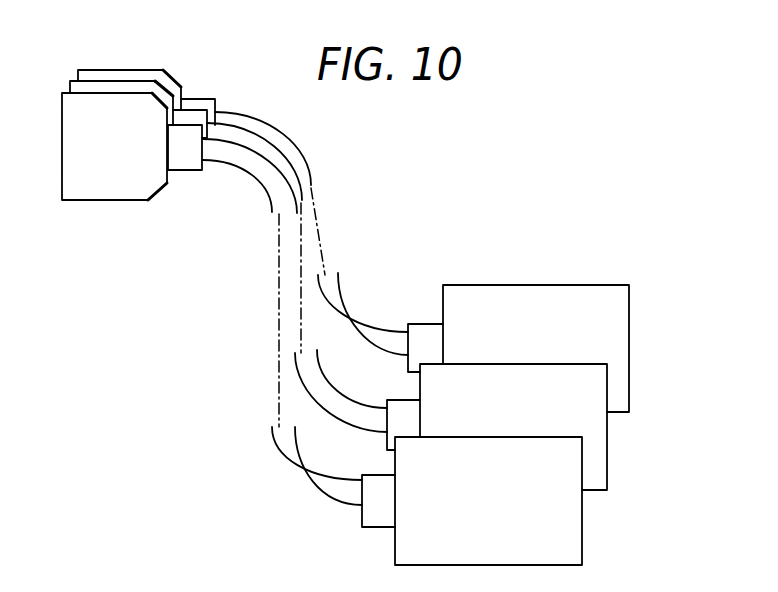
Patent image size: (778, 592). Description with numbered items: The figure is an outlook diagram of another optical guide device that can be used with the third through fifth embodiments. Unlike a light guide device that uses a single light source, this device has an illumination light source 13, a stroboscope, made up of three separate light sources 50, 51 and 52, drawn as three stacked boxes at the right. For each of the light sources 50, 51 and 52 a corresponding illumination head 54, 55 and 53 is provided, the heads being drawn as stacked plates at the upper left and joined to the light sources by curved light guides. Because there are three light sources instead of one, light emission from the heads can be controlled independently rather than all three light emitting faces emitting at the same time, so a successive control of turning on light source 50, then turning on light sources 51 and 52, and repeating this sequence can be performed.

The illumination light source 13 is at (540, 366).
The light source 50 is at (597, 460).
The light source 51 is at (570, 545).
The light source 52 is at (618, 340).
The illumination head 53 is at (117, 70).
The illumination head 54 is at (174, 88).
The illumination head 55 is at (95, 192).